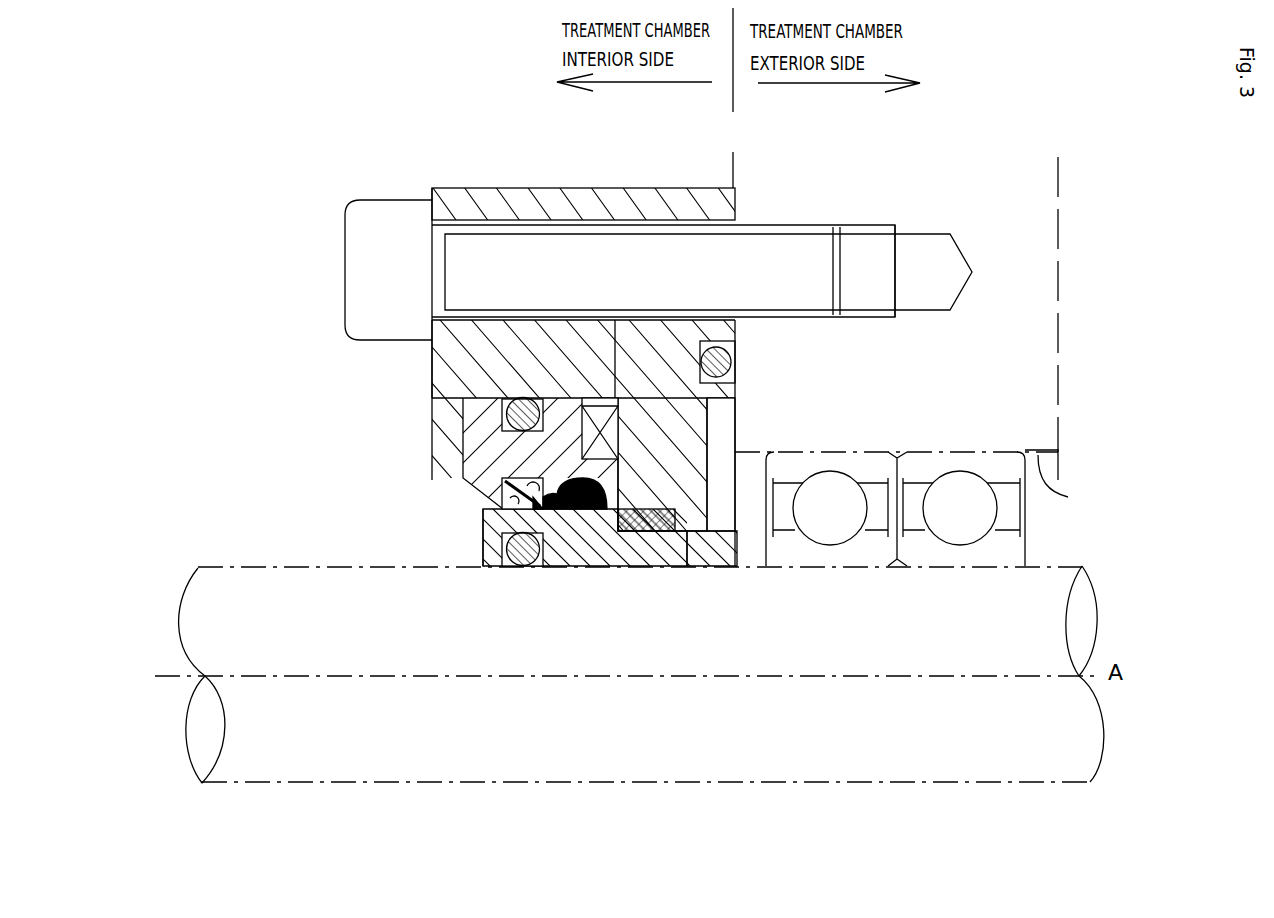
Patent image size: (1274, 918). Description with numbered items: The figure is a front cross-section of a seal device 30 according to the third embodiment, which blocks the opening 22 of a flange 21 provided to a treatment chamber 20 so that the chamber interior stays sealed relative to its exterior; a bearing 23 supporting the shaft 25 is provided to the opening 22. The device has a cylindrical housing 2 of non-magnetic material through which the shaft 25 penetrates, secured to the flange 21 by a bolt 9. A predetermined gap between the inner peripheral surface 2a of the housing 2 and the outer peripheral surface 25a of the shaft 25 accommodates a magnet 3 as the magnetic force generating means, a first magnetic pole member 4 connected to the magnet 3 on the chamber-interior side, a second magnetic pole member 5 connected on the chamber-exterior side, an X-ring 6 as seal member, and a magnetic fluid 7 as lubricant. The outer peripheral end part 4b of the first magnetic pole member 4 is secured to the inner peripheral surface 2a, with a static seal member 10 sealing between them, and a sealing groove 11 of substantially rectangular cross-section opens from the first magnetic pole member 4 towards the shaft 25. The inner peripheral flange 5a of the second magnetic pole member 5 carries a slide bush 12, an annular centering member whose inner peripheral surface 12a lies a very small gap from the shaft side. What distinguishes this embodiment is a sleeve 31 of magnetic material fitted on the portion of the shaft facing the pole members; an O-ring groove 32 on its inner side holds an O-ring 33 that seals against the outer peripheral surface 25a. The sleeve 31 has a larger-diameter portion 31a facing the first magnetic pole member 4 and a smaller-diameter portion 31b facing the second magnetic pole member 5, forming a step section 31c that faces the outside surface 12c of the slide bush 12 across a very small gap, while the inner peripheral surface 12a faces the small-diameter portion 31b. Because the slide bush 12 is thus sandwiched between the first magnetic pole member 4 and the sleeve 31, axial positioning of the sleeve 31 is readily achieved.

The housing 2 is at (446, 197).
The inner peripheral surface 2a is at (432, 420).
The magnet 3 is at (612, 398).
The first magnetic pole member 4 is at (460, 447).
The outer peripheral end part 4b is at (473, 385).
The second magnetic pole member 5 is at (710, 423).
The inner peripheral flange 5a is at (708, 524).
The X-ring 6 is at (483, 530).
The magnetic fluid 7 is at (660, 480).
The bolt 9 is at (372, 225).
The static seal member 10 is at (533, 398).
The sealing groove 11 is at (463, 477).
The slide bush 12 is at (667, 567).
The inner peripheral surface 12a is at (705, 567).
The outside surface 12c is at (608, 567).
The treatment chamber 20 is at (272, 266).
The flange 21 is at (1020, 212).
The opening 22 is at (1063, 495).
The bearing 23 is at (988, 457).
The shaft 25 is at (982, 634).
The outer peripheral surface 25a is at (1057, 563).
The seal device 30 is at (500, 172).
The sleeve 31 is at (580, 567).
The portion facing the first magnetic pole member 31a is at (470, 490).
The portion facing the second magnetic pole member 31b is at (742, 525).
The step section 31c is at (648, 567).
The O-ring groove 32 is at (510, 567).
The O-ring 33 is at (523, 567).